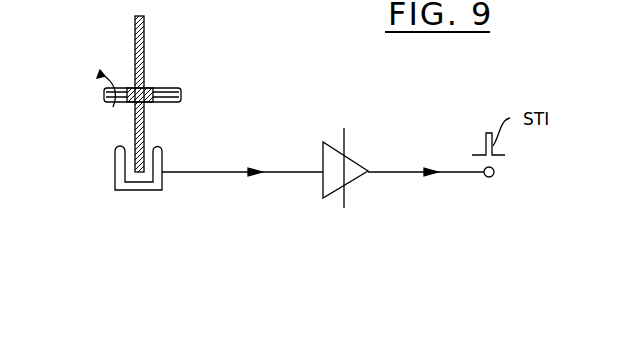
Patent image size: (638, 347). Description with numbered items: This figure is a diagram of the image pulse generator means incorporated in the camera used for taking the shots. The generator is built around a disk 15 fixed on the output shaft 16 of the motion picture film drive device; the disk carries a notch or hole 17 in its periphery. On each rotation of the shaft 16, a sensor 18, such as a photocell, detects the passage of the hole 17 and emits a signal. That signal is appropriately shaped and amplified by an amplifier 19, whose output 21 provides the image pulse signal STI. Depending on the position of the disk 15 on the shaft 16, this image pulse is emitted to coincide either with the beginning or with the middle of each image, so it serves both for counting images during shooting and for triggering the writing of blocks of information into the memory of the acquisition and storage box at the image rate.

The disk 15 is at (144, 40).
The output shaft 16 is at (165, 88).
The hole 17 is at (137, 160).
The sensor 18 is at (161, 160).
The amplifier 19 is at (356, 160).
The output 21 is at (491, 178).